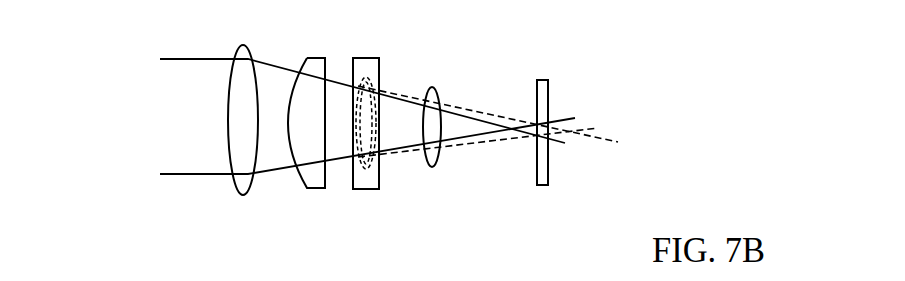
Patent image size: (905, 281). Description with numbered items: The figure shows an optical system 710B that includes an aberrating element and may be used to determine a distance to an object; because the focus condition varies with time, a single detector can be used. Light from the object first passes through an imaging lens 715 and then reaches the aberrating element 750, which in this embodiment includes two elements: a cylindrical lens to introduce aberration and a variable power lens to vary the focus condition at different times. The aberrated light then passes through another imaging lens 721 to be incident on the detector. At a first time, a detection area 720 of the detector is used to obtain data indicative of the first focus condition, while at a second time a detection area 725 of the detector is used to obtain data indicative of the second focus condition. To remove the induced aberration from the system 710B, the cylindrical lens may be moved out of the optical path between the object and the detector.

The optical system 710B is at (142, 118).
The imaging lens 715 is at (246, 195).
The aberrating element 750 is at (387, 193).
The imaging lens 721 is at (432, 87).
The detection area 720 is at (548, 122).
The detection area 725 is at (575, 119).